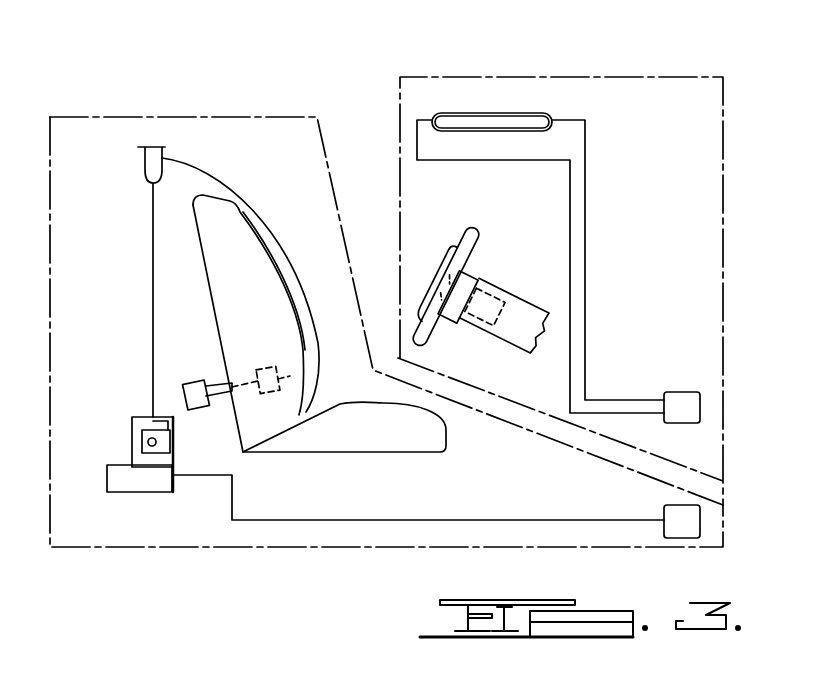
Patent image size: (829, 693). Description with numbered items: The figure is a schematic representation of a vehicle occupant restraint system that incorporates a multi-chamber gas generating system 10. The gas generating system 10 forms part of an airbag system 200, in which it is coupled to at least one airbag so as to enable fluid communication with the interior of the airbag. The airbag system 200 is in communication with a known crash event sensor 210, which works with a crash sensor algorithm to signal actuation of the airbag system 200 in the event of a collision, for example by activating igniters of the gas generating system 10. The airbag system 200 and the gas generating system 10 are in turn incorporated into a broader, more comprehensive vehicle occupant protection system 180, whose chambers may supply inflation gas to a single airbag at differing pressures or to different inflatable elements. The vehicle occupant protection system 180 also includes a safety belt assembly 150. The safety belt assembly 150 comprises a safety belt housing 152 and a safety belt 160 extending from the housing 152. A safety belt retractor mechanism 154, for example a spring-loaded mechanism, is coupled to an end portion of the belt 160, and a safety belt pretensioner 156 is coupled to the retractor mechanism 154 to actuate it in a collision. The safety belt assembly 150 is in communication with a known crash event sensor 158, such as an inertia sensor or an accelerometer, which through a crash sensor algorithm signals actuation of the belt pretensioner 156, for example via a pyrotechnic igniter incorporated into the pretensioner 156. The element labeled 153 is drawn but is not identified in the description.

The gas generating system 10 is at (497, 112).
The safety belt assembly 150 is at (205, 548).
The safety belt housing 152 is at (142, 450).
The seat belt 153 is at (163, 398).
The safety belt retractor mechanism 154 is at (140, 417).
The safety belt pretensioner 156 is at (150, 485).
The crash event sensor 158 is at (664, 513).
The safety belt 160 is at (252, 195).
The vehicle occupant protection system 180 is at (200, 101).
The airbag system 200 is at (725, 183).
The crash event sensor 210 is at (677, 402).